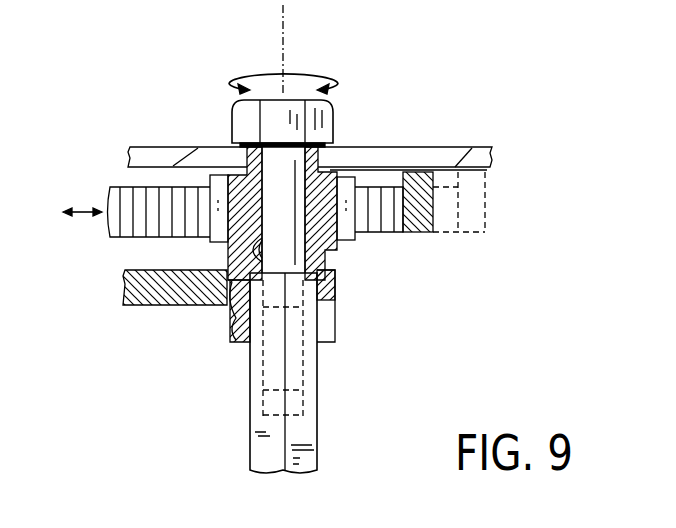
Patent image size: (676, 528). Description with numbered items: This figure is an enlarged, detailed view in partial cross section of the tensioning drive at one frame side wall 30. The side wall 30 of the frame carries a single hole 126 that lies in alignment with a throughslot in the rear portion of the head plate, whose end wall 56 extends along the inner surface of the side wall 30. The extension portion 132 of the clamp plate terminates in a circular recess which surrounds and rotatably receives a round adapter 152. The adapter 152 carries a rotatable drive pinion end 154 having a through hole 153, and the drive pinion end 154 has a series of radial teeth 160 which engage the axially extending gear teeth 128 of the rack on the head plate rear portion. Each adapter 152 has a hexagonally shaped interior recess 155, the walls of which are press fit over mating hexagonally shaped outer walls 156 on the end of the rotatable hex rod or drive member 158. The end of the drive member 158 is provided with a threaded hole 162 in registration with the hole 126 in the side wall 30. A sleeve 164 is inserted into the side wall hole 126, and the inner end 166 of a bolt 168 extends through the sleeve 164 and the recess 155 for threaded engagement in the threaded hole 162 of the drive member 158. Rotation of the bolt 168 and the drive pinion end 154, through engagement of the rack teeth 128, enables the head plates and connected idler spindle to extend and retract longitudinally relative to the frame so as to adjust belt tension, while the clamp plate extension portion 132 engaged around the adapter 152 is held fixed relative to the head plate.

The side wall 30 is at (448, 148).
The end wall 56 is at (432, 220).
The hole 126 is at (355, 147).
The gear teeth 128 is at (130, 237).
The extension portion 132 is at (131, 300).
The adapter 152 is at (335, 320).
The through hole 153 is at (233, 260).
The drive pinion end 154 is at (132, 174).
The hexagonally shaped interior recess 155 is at (233, 313).
The hexagonally shaped outer walls 156 is at (303, 455).
The drive member 158 is at (303, 430).
The radial teeth 160 is at (345, 240).
The threaded hole 162 is at (310, 376).
The sleeve 164 is at (232, 145).
The inner end of bolt 166 is at (305, 400).
The bolt 168 is at (335, 112).